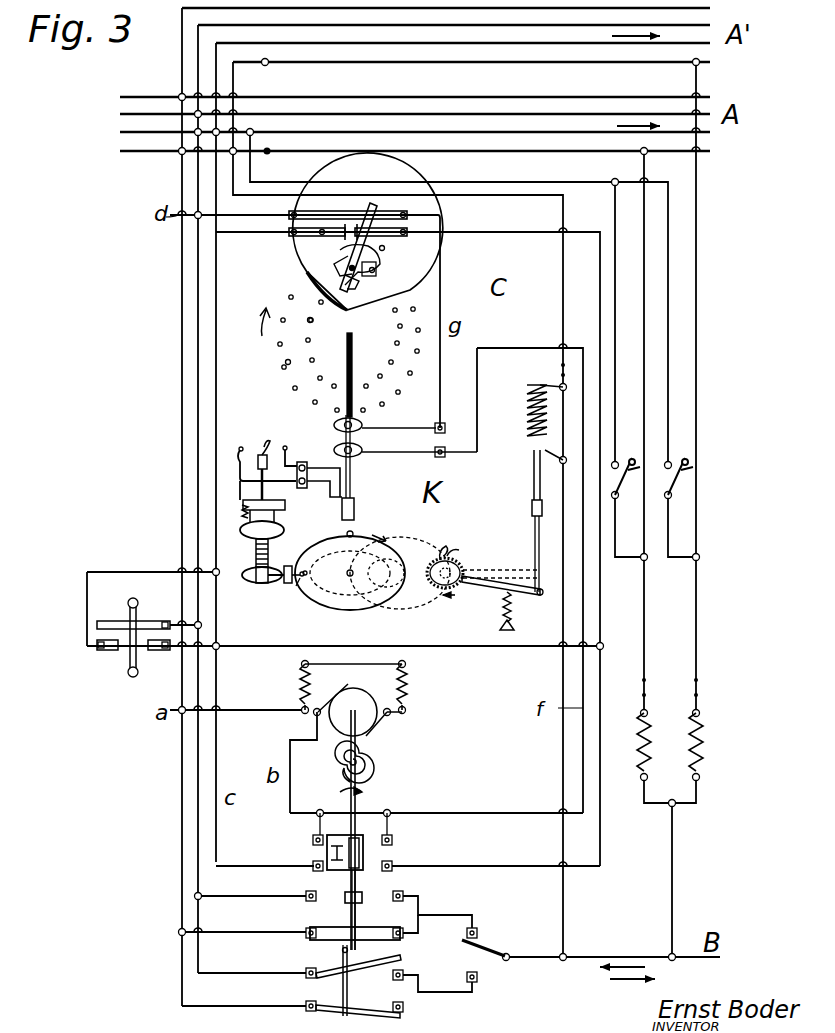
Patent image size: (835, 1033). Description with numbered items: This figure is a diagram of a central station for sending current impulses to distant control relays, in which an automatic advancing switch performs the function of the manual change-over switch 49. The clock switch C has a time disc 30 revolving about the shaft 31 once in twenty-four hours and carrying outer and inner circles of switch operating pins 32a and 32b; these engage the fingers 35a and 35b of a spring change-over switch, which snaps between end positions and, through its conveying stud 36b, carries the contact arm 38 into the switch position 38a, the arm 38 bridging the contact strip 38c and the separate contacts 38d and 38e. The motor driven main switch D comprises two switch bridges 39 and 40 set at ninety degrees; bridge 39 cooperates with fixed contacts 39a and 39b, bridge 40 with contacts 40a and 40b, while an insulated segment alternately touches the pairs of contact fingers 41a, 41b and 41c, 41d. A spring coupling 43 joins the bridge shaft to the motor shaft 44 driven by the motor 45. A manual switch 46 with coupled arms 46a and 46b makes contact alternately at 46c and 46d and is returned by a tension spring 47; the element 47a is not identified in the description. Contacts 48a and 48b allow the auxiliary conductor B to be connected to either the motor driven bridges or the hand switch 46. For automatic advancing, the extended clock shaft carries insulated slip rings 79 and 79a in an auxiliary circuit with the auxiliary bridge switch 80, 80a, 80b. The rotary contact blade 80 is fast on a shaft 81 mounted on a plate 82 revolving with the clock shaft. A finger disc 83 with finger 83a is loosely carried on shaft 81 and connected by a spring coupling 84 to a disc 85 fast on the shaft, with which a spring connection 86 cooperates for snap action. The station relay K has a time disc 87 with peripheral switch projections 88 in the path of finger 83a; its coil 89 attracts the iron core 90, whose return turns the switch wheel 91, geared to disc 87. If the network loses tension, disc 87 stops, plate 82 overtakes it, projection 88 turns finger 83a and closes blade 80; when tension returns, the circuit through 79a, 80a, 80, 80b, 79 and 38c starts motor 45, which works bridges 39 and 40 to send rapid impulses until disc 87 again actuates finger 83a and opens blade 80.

The time disc 30 is at (398, 382).
The shaft 31 is at (354, 330).
The outer circle of switch operating pins 32a is at (287, 362).
The inner circle of switch operating pins 32b is at (312, 322).
The finger of spring change-over switch 35a is at (356, 284).
The finger of spring change-over switch 35b is at (342, 280).
The conveying stud 36b is at (380, 270).
The contact arm 38 is at (348, 206).
The switch position 38a is at (383, 215).
The contact strip 38c is at (358, 205).
The separate contact 38d is at (304, 236).
The separate contact 38e is at (387, 240).
The switch bridge 39 is at (360, 896).
The fixed contact 39a is at (314, 894).
The fixed contact 39b is at (402, 892).
The switch bridge 40 is at (386, 924).
The fixed contact 40a is at (312, 940).
The fixed contact 40b is at (404, 940).
The contact finger 41a is at (308, 840).
The contact finger 41b is at (308, 864).
The contact finger 41c is at (392, 840).
The contact finger 41d is at (396, 866).
The spring coupling 43 is at (366, 766).
The motor shaft 44 is at (358, 752).
The motor 45 is at (364, 694).
The manual switch 46 is at (358, 984).
The switch arm 46a is at (356, 1014).
The switch arm 46b is at (322, 965).
The contact 46c is at (406, 974).
The contact 46d is at (404, 1012).
The tension spring 47 is at (346, 840).
The pin 47a is at (344, 954).
The contact 48a is at (478, 934).
The contact 48b is at (480, 979).
The change-over switch 49 is at (133, 637).
The slip ring 79 is at (336, 422).
The slip ring 79a is at (346, 446).
The rotary contact blade 80 is at (264, 442).
The auxiliary switch contact 80a is at (246, 440).
The auxiliary switch contact 80b is at (286, 452).
The shaft 81 is at (235, 491).
The plate 82 is at (340, 492).
The finger disc 83 is at (254, 582).
The finger 83a is at (298, 584).
The spring coupling 84 is at (256, 560).
The disc 85 is at (266, 534).
The spring connection 86 is at (235, 518).
The time disc 87 is at (362, 608).
The switch projections 88 is at (286, 568).
The coil 89 is at (527, 420).
The iron core 90 is at (532, 485).
The switch wheel 91 is at (458, 564).